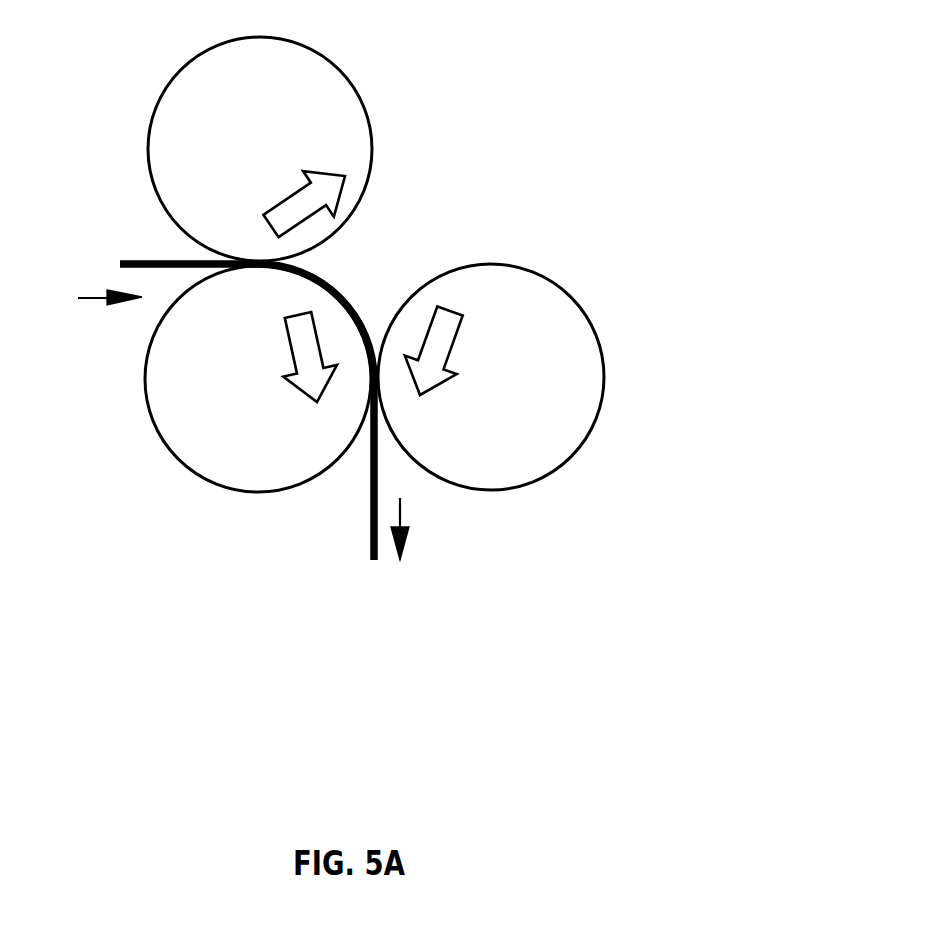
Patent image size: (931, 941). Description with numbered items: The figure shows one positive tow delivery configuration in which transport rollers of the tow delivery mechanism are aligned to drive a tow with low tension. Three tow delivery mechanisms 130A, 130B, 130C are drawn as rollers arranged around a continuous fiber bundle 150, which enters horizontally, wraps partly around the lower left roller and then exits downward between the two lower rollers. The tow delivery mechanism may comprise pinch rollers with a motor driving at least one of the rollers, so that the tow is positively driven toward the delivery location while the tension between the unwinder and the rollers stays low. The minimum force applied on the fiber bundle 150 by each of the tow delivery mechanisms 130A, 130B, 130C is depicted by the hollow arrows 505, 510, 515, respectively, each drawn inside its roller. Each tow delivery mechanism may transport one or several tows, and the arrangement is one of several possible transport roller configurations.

The tow delivery mechanism 130A is at (357, 102).
The tow delivery mechanism 130B is at (205, 478).
The tow delivery mechanism 130C is at (578, 452).
The fiber bundle 150 is at (343, 282).
The arrow 505 is at (288, 206).
The arrow 510 is at (305, 357).
The arrow 515 is at (440, 345).